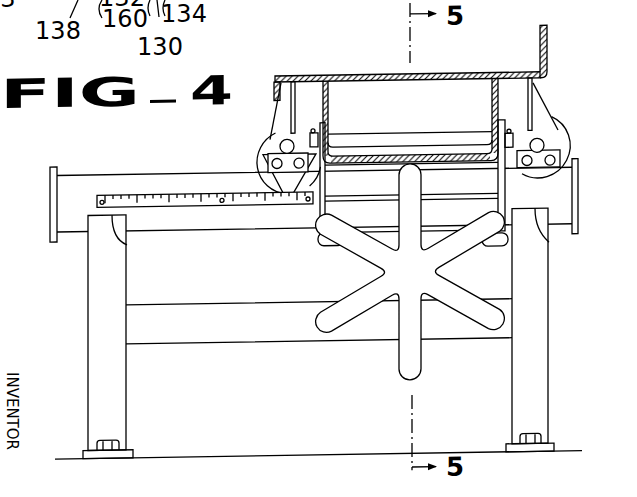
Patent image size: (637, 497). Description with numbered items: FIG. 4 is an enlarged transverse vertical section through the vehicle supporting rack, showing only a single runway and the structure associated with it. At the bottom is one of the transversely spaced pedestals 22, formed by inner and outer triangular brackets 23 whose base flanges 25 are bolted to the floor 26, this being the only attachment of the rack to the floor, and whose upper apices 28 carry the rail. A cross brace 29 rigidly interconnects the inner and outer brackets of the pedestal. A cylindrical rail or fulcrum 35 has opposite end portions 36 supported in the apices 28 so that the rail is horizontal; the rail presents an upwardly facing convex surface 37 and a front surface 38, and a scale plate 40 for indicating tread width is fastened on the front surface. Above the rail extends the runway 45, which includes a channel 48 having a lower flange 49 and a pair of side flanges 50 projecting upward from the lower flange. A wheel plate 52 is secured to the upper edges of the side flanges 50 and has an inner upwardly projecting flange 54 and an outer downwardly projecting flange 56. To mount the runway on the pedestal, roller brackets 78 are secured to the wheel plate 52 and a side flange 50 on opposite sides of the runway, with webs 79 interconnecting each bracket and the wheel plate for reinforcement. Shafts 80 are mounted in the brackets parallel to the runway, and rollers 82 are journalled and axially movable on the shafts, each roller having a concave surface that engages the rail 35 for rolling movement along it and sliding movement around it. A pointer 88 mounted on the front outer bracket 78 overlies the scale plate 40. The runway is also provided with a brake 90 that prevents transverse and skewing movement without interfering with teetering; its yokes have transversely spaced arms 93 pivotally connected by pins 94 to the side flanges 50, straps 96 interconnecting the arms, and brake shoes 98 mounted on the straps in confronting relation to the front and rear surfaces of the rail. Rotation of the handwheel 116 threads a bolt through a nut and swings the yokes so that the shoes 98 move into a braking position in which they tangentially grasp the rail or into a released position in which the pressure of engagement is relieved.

The pedestal 22 is at (97, 327).
The triangular bracket 23 is at (118, 416).
The base flange 25 is at (128, 454).
The floor 26 is at (335, 458).
The upper apex 28 is at (128, 247).
The cross brace 29 is at (220, 341).
The cylindrical rail 35 is at (137, 172).
The end portion 36 is at (68, 185).
The upwardly facing convex surface 37 is at (198, 174).
The front surface 38 is at (385, 191).
The scale plate 40 is at (182, 208).
The runway 45 is at (329, 77).
The channel 48 is at (494, 115).
The lower flange 49 is at (371, 160).
The side flange 50 is at (487, 94).
The wheel plate 52 is at (387, 80).
The inner upwardly projecting flange 54 is at (549, 51).
The outer downwardly projecting flange 56 is at (279, 85).
The roller bracket 78 is at (283, 120).
The web 79 is at (296, 111).
The shaft 80 is at (280, 150).
The roller 82 is at (259, 143).
The pointer 88 is at (272, 186).
The brake 90 is at (343, 256).
The arm 93 is at (325, 188).
The pin 94 is at (428, 144).
The strap 96 is at (389, 241).
The brake shoe 98 is at (468, 232).
The handwheel 116 is at (405, 370).